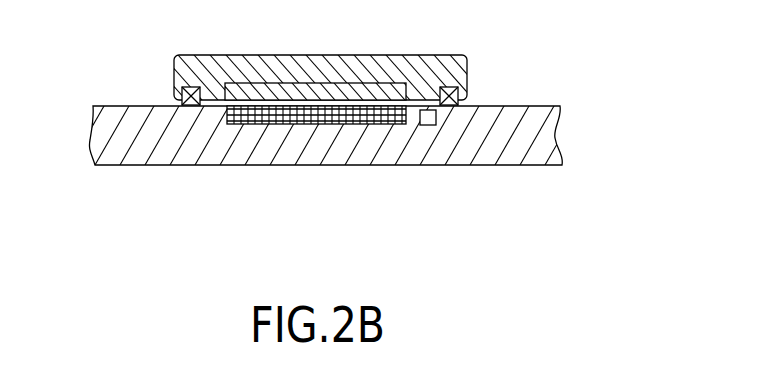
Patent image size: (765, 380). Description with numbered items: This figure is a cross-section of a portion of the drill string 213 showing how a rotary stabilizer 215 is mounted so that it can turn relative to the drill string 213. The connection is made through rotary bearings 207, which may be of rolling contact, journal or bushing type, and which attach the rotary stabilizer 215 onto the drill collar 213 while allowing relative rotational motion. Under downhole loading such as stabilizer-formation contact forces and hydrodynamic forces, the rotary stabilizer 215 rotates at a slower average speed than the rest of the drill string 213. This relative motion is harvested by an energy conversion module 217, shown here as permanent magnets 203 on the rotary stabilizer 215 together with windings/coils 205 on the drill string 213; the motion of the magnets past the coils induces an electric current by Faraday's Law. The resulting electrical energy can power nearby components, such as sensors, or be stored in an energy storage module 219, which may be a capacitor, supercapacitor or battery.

The permanent magnets 203 is at (283, 87).
The windings/coils 205 is at (382, 115).
The rotary bearings 207 is at (448, 105).
The drill string 213 is at (530, 140).
The rotary stabilizer 215 is at (201, 95).
The energy conversion module 217 is at (400, 228).
The energy storage module 219 is at (428, 118).